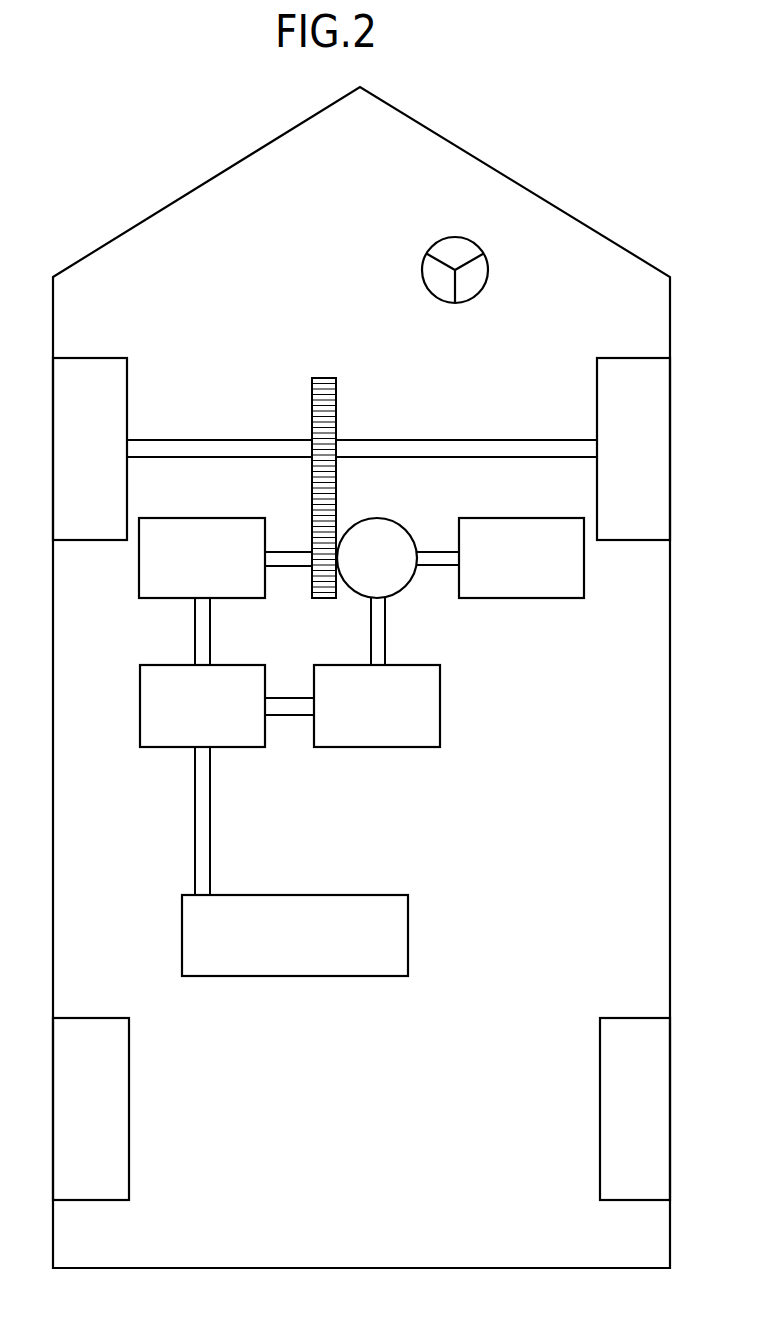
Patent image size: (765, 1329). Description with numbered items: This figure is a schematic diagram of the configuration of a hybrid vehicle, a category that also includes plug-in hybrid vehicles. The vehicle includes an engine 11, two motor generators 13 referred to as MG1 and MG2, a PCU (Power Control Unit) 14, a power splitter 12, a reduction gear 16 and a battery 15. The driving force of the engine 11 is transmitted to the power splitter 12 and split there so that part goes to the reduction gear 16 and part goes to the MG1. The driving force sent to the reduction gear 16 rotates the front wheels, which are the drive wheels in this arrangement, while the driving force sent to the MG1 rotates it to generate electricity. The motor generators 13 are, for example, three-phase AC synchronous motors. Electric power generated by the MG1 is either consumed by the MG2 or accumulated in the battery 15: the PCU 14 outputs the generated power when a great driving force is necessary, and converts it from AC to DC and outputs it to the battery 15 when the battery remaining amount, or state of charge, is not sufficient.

The engine 11 is at (513, 518).
The power splitter 12 is at (375, 519).
The motor generator 13 is at (192, 518).
The PCU (Power Control Unit) 14 is at (232, 665).
The battery 15 is at (333, 895).
The reduction gear 16 is at (337, 528).